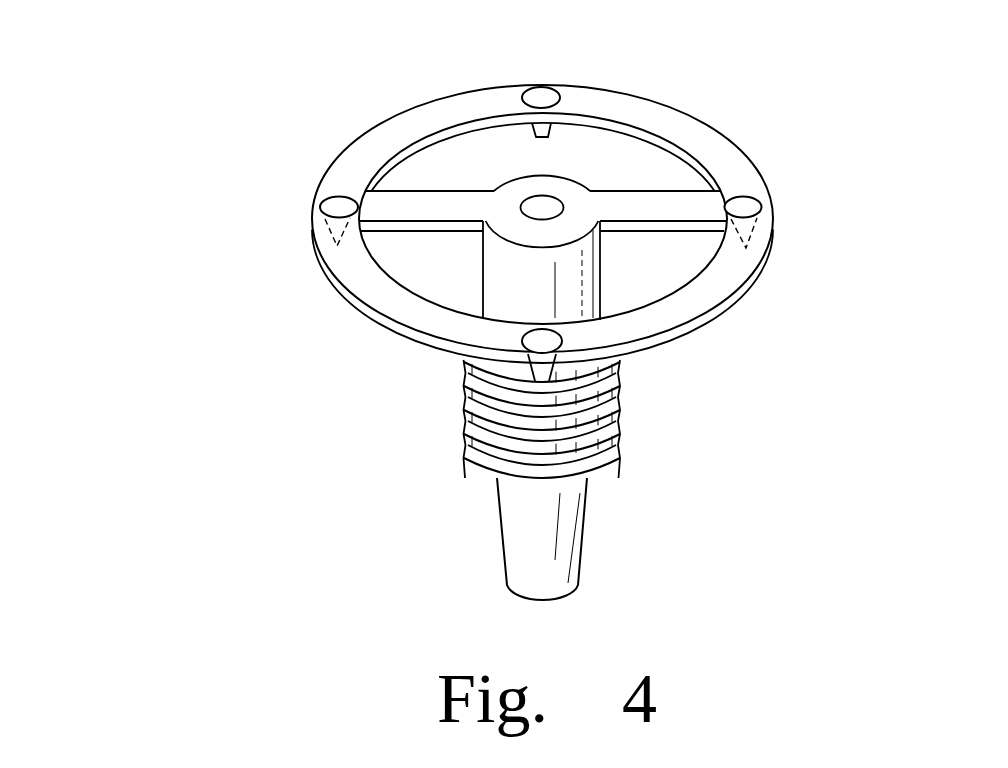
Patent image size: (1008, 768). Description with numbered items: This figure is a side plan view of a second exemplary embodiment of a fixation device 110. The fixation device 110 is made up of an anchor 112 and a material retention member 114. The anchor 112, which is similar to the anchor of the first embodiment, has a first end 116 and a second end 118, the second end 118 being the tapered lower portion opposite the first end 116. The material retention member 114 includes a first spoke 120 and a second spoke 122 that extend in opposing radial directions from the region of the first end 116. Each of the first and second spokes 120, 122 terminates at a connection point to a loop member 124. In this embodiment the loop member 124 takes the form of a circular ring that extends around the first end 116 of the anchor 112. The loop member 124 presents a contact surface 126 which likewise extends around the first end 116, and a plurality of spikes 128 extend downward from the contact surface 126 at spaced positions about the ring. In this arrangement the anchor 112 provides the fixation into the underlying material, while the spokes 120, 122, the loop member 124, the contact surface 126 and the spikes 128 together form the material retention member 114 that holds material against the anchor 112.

The fixation device 110 is at (184, 112).
The anchor 112 is at (650, 485).
The material retention member 114 is at (800, 160).
The first end 116 is at (600, 150).
The second end 118 is at (488, 587).
The first spoke 120 is at (415, 205).
The second spoke 122 is at (677, 190).
The loop member 124 is at (712, 291).
The contact surface 126 is at (371, 319).
The spikes 128 is at (558, 128).